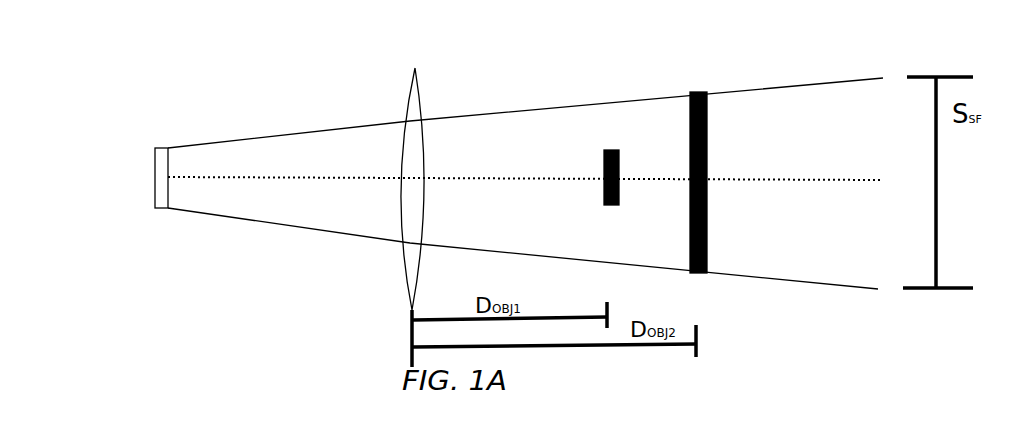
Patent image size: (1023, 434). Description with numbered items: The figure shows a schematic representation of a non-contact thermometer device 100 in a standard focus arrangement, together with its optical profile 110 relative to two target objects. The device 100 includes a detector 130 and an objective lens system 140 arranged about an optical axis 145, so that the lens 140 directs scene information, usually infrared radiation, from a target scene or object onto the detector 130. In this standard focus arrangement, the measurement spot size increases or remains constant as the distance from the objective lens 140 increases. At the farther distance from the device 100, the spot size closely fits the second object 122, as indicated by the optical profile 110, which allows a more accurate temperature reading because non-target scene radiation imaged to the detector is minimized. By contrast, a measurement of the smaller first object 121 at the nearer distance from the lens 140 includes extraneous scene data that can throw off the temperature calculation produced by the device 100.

The non-contact thermometer device 100 is at (410, 338).
The optical profile 110 is at (528, 108).
The first object 121 is at (618, 151).
The second object 122 is at (708, 106).
The detector 130 is at (165, 149).
The objective lens system 140 is at (414, 68).
The optical axis 145 is at (793, 181).